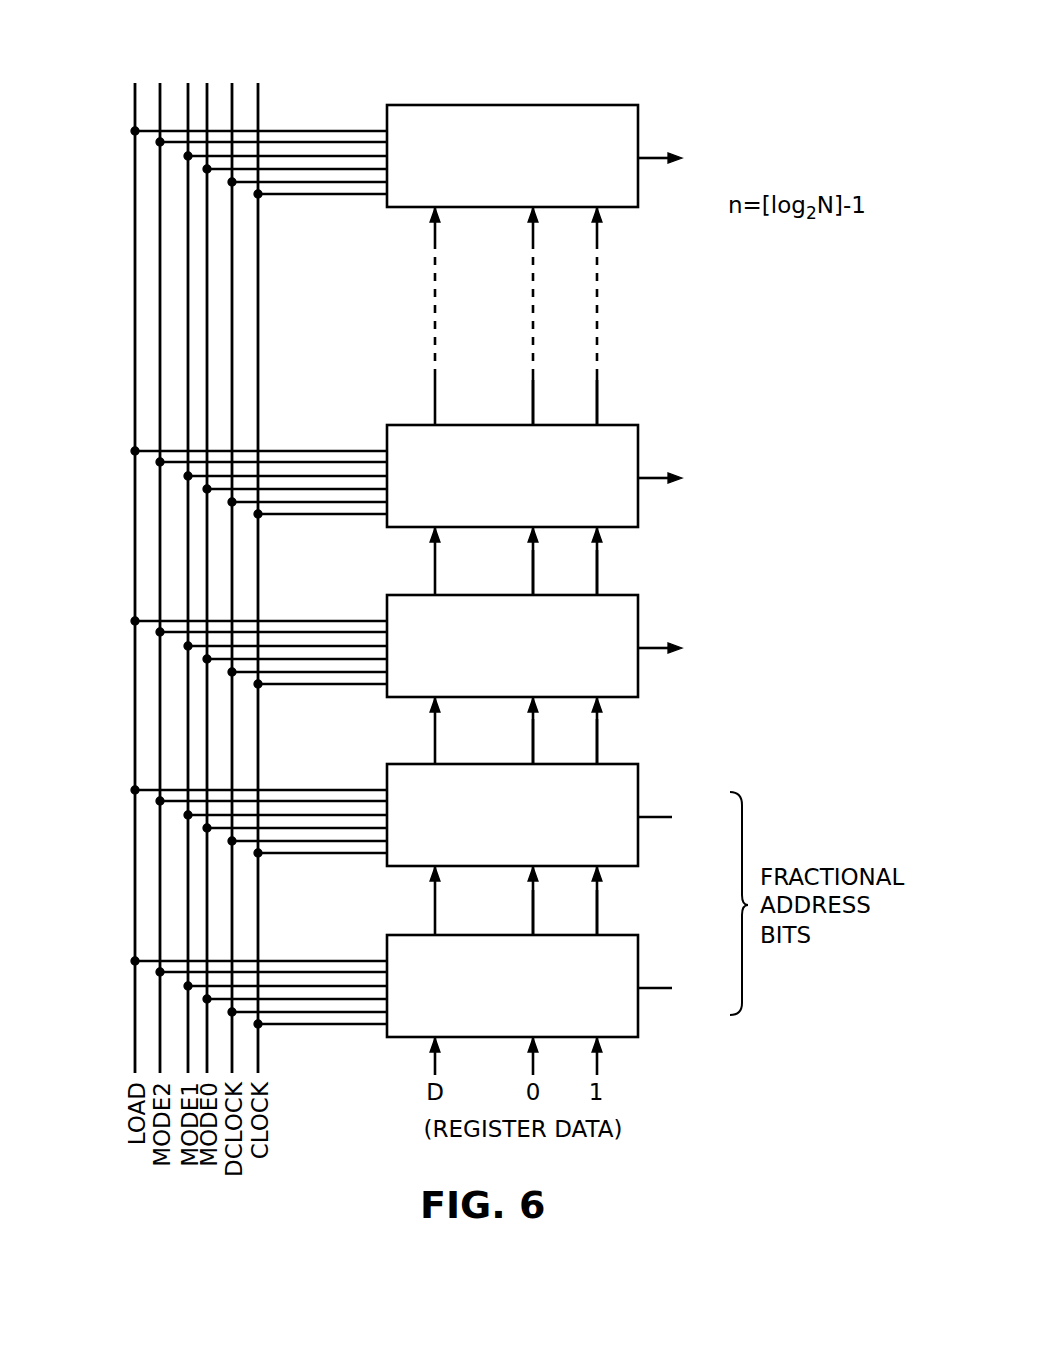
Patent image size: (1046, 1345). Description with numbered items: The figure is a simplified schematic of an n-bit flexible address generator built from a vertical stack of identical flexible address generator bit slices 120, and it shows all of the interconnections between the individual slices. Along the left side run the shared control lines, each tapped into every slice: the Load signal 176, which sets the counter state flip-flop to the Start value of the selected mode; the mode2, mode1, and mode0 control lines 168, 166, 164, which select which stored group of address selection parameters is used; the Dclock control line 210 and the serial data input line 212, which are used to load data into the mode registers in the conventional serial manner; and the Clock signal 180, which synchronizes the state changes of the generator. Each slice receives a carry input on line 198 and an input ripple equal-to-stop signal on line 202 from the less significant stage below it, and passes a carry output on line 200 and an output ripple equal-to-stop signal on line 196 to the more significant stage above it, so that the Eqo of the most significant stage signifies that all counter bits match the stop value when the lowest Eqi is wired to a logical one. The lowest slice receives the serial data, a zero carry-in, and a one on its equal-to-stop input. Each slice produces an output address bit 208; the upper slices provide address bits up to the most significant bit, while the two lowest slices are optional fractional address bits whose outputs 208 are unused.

The flexible address generator bit slice 120 is at (603, 103).
The output address bit 208 is at (648, 153).
The carry input line 198 is at (527, 212).
The input ripple equal-to-stop signal line 202 is at (600, 212).
The serial data input line 212 is at (433, 395).
The carry output line 200 is at (530, 420).
The output ripple equal-to-stop signal line 196 is at (596, 420).
The Load signal 176 is at (135, 107).
The mode2 control line 168 is at (160, 100).
The mode1 control line 166 is at (188, 95).
The mode0 control line 164 is at (207, 97).
The Dclock control line 210 is at (232, 93).
The Clock signal 180 is at (258, 90).